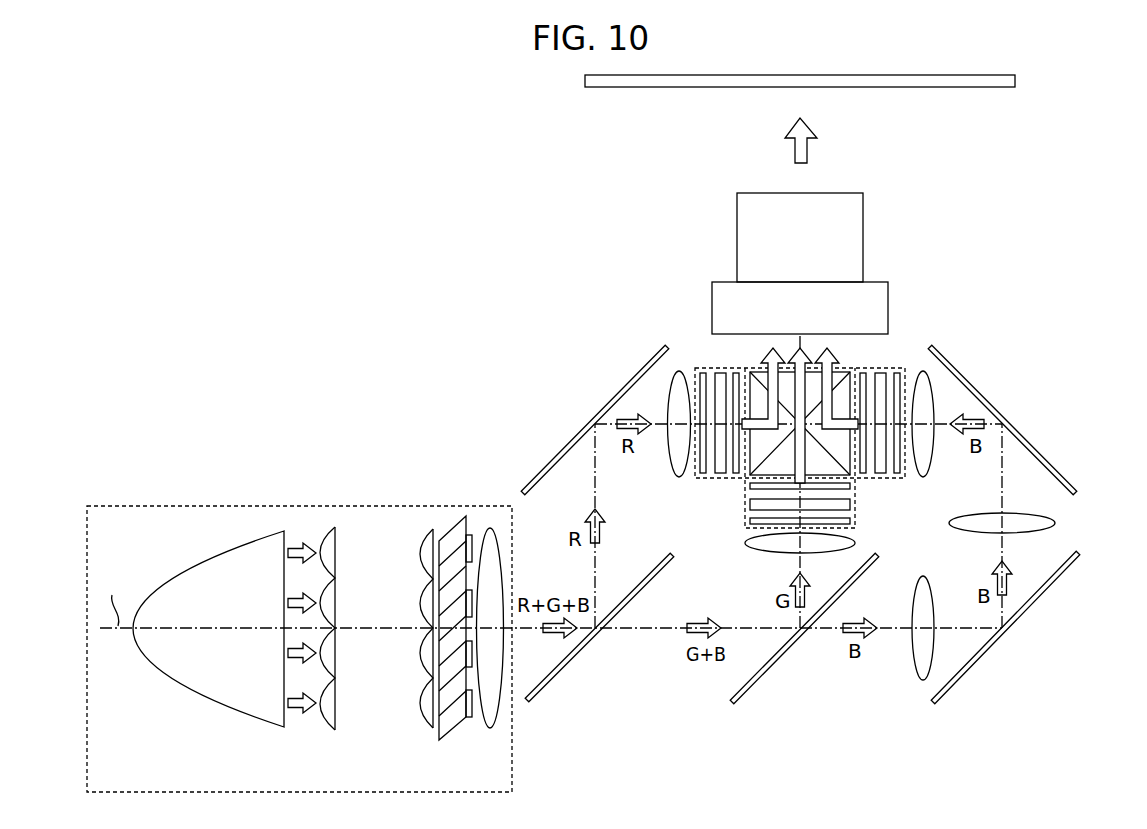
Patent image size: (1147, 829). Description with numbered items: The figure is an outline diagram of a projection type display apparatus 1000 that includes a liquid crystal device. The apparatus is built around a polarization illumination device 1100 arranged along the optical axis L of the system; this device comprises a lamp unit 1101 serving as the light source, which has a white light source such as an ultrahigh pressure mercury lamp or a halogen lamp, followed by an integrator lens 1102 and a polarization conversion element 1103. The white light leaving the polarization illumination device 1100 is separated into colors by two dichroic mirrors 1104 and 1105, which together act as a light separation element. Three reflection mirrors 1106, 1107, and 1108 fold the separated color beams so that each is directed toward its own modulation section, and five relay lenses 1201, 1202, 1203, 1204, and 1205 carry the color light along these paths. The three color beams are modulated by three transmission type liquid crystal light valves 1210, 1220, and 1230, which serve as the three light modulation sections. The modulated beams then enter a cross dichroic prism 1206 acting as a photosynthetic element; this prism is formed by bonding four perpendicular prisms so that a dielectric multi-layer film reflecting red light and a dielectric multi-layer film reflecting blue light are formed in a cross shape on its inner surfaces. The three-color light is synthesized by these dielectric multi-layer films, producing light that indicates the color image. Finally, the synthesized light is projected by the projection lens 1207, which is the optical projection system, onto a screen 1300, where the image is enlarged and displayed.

The projection type display apparatus 1000 is at (1115, 163).
The polarization illumination device 1100 is at (315, 507).
The lamp unit 1101 is at (207, 708).
The integrator lens 1102 is at (328, 732).
The polarization conversion element 1103 is at (508, 740).
The dichroic mirror 1104 is at (564, 673).
The dichroic mirror 1105 is at (769, 673).
The reflection mirror 1106 is at (589, 417).
The reflection mirror 1107 is at (971, 673).
The reflection mirror 1108 is at (1005, 416).
The relay lens 1201 is at (923, 682).
The relay lens 1202 is at (1056, 522).
The relay lens 1203 is at (922, 479).
The relay lens 1204 is at (748, 553).
The relay lens 1205 is at (680, 479).
The cross dichroic prism 1206 is at (845, 367).
The projection lens 1207 is at (856, 235).
The transmission type liquid crystal light valve 1210 is at (712, 367).
The transmission type liquid crystal light valve 1220 is at (856, 522).
The transmission type liquid crystal light valve 1230 is at (891, 367).
The screen 1300 is at (950, 88).